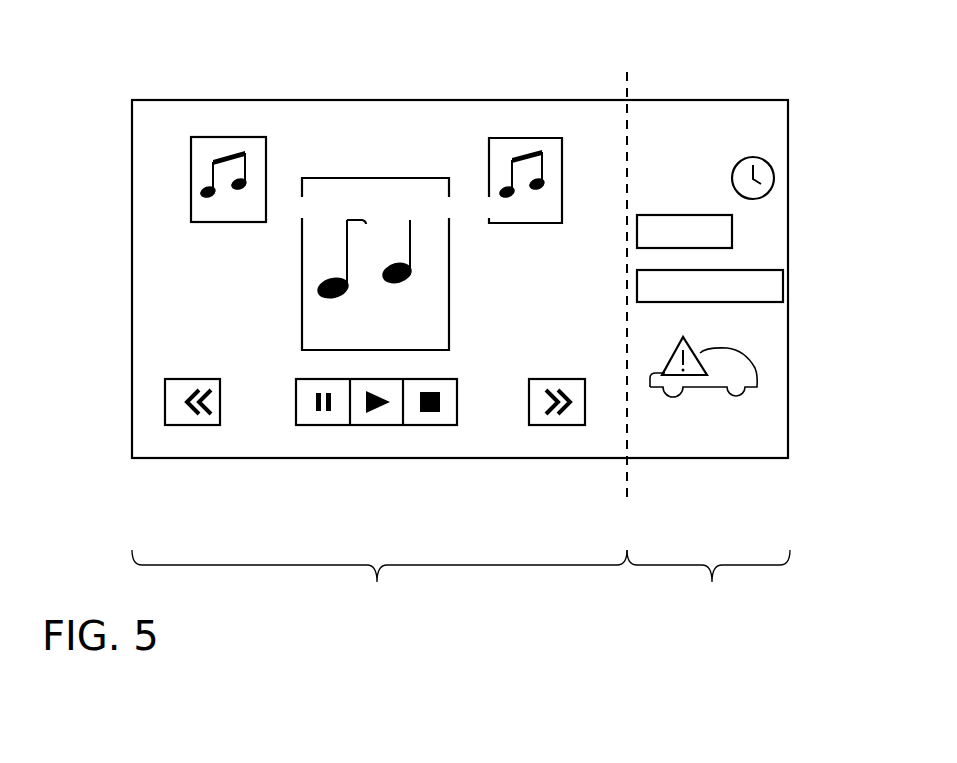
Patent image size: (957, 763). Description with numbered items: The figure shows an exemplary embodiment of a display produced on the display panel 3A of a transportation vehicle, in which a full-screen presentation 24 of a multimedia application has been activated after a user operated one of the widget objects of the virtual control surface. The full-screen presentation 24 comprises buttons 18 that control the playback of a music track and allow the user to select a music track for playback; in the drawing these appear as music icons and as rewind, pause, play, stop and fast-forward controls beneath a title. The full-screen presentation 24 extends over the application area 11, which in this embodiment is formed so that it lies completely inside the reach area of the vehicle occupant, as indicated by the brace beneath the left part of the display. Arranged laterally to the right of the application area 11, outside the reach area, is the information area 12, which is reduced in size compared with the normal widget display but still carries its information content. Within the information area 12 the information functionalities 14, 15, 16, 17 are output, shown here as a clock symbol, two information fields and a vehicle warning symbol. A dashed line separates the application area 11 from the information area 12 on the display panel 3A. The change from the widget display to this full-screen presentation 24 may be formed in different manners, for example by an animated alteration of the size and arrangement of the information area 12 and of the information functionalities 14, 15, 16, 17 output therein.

The display panel 3A is at (792, 86).
The full-screen presentation 24 is at (300, 112).
The buttons 18 is at (237, 137).
The information functionality 15 is at (800, 178).
The information functionality 14 is at (732, 232).
The information functionality 17 is at (783, 288).
The information functionality 16 is at (775, 380).
The application area 11 is at (379, 583).
The information area 12 is at (708, 583).